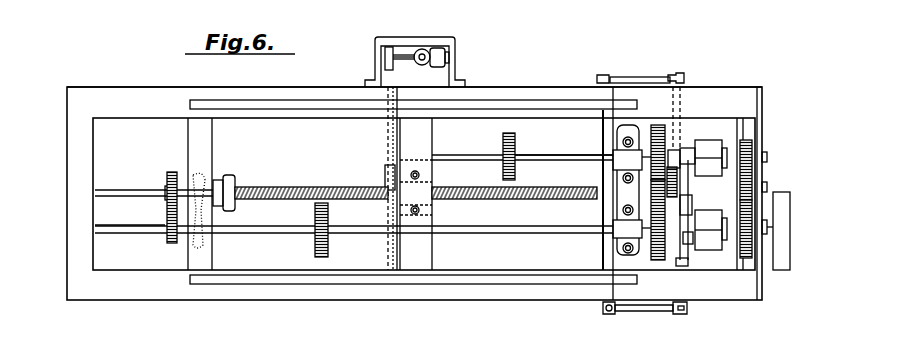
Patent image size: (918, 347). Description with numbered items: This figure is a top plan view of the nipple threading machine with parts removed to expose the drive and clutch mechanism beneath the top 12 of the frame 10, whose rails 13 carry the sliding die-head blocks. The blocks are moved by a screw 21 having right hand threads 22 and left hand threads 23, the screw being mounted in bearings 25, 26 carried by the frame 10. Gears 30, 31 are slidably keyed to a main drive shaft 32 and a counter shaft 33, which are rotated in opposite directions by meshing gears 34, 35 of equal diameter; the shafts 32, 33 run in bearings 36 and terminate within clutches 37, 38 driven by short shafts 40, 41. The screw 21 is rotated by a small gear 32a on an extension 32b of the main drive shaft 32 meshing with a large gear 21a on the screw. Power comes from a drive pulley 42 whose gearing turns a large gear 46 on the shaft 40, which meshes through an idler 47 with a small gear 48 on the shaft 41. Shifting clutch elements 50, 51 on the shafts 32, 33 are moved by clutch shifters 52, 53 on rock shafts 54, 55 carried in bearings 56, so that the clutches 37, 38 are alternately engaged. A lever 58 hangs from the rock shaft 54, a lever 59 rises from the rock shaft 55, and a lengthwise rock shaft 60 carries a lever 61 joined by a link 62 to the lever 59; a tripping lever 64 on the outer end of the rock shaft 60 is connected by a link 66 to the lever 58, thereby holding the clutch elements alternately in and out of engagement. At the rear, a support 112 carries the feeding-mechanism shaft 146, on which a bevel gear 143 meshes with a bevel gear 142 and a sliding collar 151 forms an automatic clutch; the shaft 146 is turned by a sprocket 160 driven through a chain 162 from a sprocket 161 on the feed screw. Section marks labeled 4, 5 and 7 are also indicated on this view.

The frame 10 is at (110, 102).
The top 12 is at (285, 96).
The rails 13 is at (235, 108).
The screw 21 is at (278, 183).
The large gear 21a is at (162, 180).
The right hand threads 22 is at (305, 186).
The left hand threads 23 is at (520, 196).
The bearing 25 is at (432, 166).
The bearing 26 is at (222, 182).
The gear 30 is at (316, 240).
The gear 31 is at (512, 152).
The main drive shaft 32 is at (290, 236).
The small gear 32a is at (166, 242).
The extension 32b is at (145, 213).
The counter shaft 33 is at (572, 150).
The gear 34 is at (658, 258).
The gear 35 is at (656, 124).
The bearings 36 is at (624, 145).
The clutch 37 is at (700, 222).
The clutch 38 is at (708, 145).
The short shaft 40 is at (773, 229).
The short shaft 41 is at (768, 157).
The drive pulley 42 is at (784, 262).
The large gear 46 is at (747, 258).
The idler 47 is at (750, 186).
The small gear 48 is at (750, 140).
The shifting clutch element 50 is at (692, 240).
The shifting clutch element 51 is at (688, 154).
The clutch shifter 52 is at (688, 205).
The clutch shifter 53 is at (677, 150).
The rock shaft 54 is at (680, 266).
The rock shaft 55 is at (684, 100).
The bearings 56 is at (670, 185).
The lever 58 is at (688, 311).
The lever 59 is at (676, 76).
The rock shaft 60 is at (608, 207).
The lever 61 is at (607, 78).
The link 62 is at (640, 78).
The lever 64 is at (603, 310).
The link 66 is at (648, 312).
The support 112 is at (375, 44).
The bevel gear 142 is at (425, 49).
The bevel gear 143 is at (417, 69).
The shaft 146 is at (400, 53).
The collar 151 is at (447, 70).
The sprocket 160 is at (385, 64).
The sprocket 161 is at (394, 262).
The chain 162 is at (388, 132).
The section line 4 is at (332, 6).
The section line 5 is at (519, 6).
The section line 7 is at (429, 9).